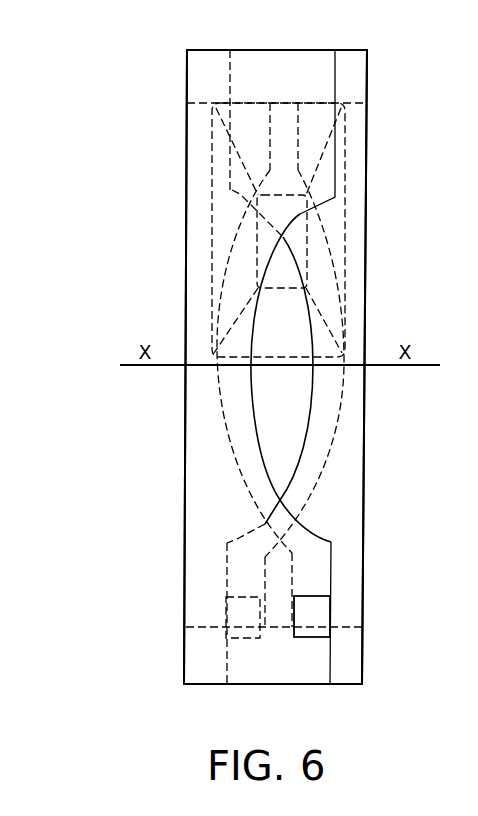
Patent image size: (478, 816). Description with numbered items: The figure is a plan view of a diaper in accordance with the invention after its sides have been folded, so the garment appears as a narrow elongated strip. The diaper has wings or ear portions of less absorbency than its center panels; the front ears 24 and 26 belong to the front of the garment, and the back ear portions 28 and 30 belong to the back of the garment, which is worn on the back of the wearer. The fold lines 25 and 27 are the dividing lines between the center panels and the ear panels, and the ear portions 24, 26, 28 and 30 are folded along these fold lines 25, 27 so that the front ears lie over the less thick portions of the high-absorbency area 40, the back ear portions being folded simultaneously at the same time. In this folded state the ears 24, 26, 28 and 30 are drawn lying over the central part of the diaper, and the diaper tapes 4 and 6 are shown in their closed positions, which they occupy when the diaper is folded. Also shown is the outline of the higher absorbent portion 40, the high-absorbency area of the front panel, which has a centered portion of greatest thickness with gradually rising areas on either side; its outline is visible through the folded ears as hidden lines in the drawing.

The diaper tape 4 is at (226, 617).
The diaper tape 6 is at (332, 612).
The front ear 24 is at (337, 83).
The fold line 25 is at (188, 250).
The front ear 26 is at (230, 88).
The fold line 27 is at (366, 248).
The back ear portion 28 is at (332, 553).
The back ear portion 30 is at (227, 570).
The high-absorbency area 40 is at (235, 199).